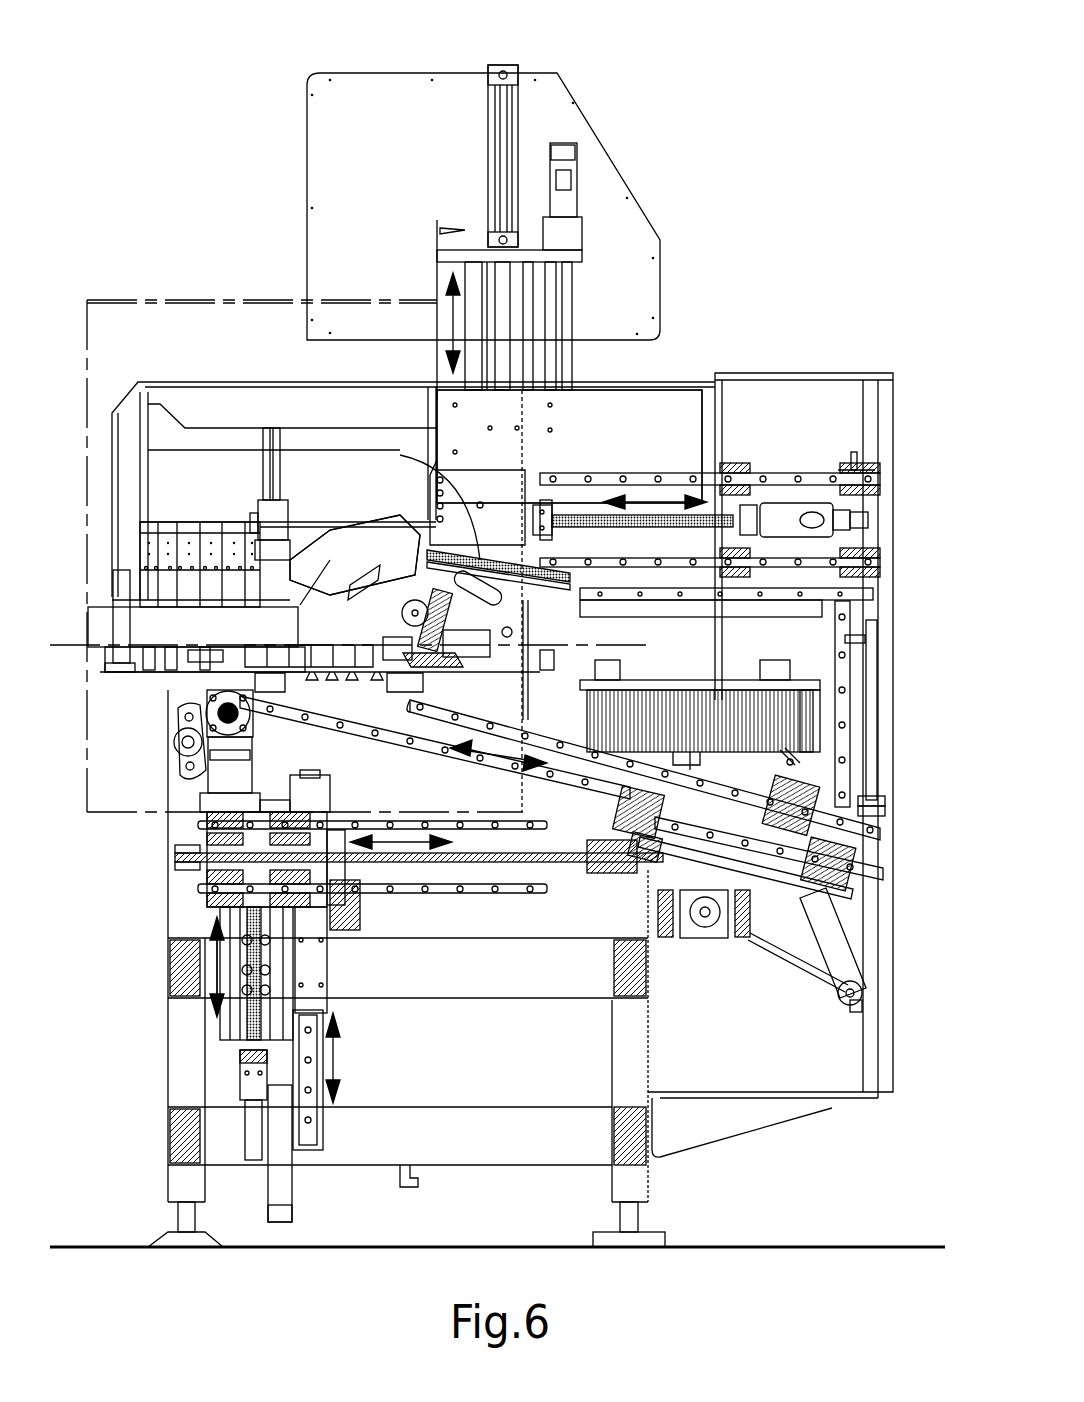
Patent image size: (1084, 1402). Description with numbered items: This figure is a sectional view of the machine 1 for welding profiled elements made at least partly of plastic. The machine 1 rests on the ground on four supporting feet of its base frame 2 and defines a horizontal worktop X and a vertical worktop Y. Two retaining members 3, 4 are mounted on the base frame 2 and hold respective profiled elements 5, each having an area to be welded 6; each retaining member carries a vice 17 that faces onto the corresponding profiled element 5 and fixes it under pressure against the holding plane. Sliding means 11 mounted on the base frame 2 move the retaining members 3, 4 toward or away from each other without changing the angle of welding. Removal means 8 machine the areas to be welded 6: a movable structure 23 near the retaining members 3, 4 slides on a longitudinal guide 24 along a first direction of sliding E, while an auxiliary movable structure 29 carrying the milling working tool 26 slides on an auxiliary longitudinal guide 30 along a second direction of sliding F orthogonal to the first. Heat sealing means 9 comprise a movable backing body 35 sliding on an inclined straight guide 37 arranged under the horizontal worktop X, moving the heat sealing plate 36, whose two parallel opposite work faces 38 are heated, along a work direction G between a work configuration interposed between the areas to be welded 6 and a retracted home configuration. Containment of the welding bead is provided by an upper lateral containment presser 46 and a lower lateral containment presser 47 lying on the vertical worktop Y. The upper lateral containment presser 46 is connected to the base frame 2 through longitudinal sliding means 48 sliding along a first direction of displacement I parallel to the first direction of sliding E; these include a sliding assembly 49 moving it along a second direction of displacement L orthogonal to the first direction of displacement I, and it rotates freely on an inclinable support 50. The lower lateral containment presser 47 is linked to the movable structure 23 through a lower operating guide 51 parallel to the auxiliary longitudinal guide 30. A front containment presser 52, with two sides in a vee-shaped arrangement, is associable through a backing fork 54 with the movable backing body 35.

The machine 1 is at (920, 0).
The base frame 2 is at (187, 1187).
The retaining member 3 is at (377, 545).
The retaining member 4 is at (355, 555).
The profiled element 5 is at (215, 637).
The area to be welded 6 is at (227, 633).
The removal means 8 is at (230, 768).
The heat sealing means 9 is at (855, 792).
The sliding means 11 is at (233, 672).
The vice 17 is at (397, 543).
The movable structure 23 is at (198, 860).
The longitudinal guide 24 is at (197, 887).
The working tool 26 is at (235, 690).
The auxiliary movable structure 29 is at (227, 1062).
The auxiliary longitudinal guide 30 is at (243, 1020).
The movable backing body 35 is at (830, 821).
The heat sealing plate 36 is at (764, 675).
The work faces 38 is at (789, 719).
The straight guide 37 is at (800, 875).
The upper lateral containment presser 46 is at (530, 507).
The lower lateral containment presser 47 is at (208, 803).
The longitudinal sliding means 48 is at (859, 495).
The sliding assembly 49 is at (502, 508).
The inclinable support 50 is at (557, 517).
The lower operating guide 51 is at (318, 1125).
The front containment presser 52 is at (483, 690).
The backing fork 54 is at (545, 660).
The second direction of displacement L is at (447, 327).
The first direction of displacement I is at (563, 545).
The horizontal worktop X is at (68, 645).
The vertical worktop Y is at (202, 300).
The first direction of sliding E is at (405, 847).
The second direction of sliding F is at (217, 967).
The work direction G is at (505, 755).